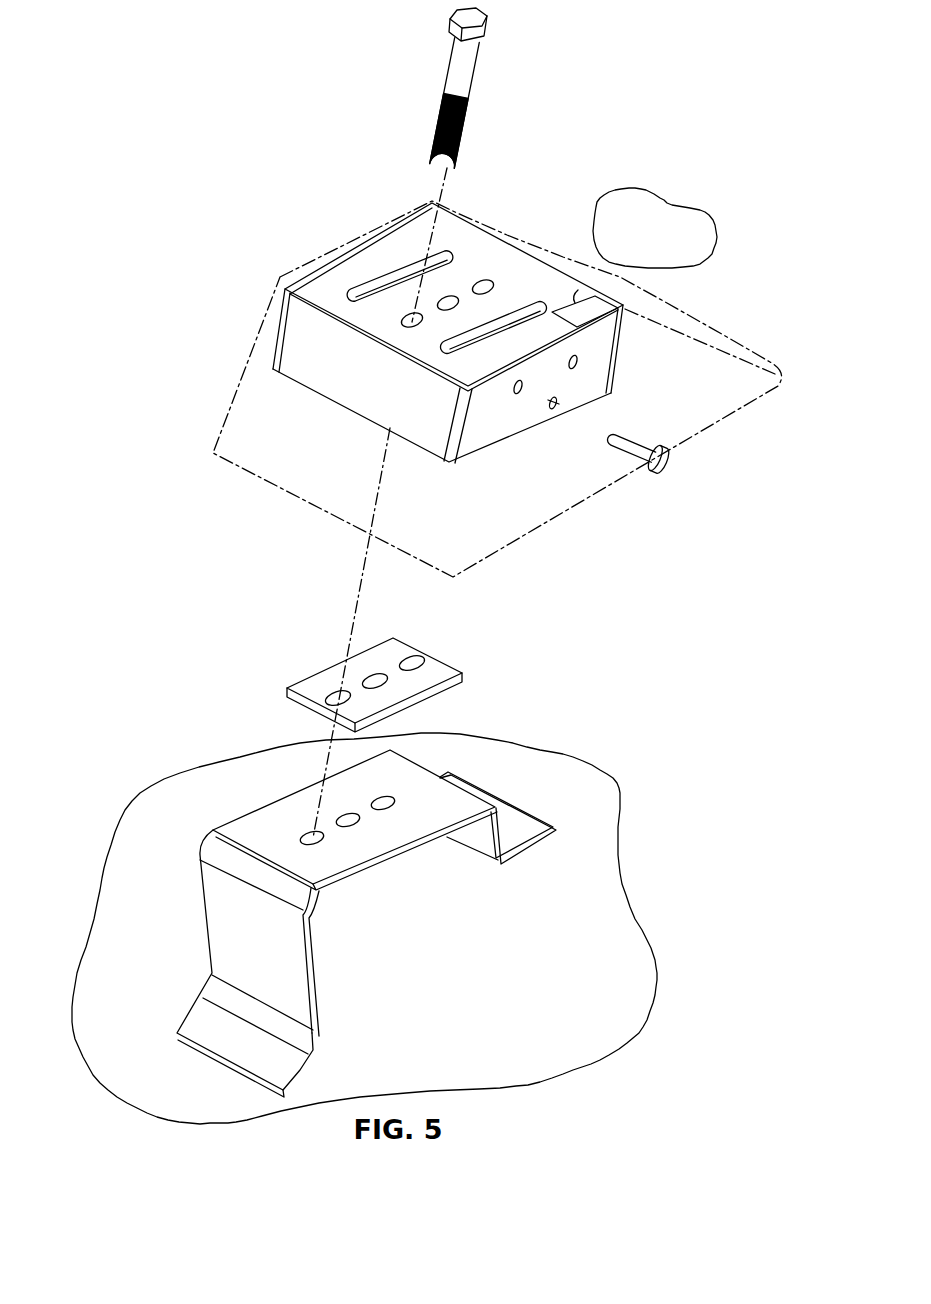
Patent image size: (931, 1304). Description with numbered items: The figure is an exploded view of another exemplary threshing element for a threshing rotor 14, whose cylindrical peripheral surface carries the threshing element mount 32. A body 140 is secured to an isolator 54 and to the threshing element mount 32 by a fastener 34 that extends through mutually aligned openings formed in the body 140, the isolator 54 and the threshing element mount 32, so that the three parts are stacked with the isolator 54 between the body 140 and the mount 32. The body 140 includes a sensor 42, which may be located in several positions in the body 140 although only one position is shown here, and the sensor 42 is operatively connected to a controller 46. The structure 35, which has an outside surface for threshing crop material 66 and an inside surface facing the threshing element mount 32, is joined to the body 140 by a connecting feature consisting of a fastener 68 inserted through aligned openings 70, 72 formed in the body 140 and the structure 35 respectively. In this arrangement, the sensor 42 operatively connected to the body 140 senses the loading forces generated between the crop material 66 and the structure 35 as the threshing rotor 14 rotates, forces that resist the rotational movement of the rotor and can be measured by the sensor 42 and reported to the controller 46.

The threshing rotor 14 is at (618, 847).
The threshing element mount 32 is at (318, 970).
The fastener 34 is at (488, 27).
The structure 35 is at (335, 249).
The sensor 42 is at (635, 317).
The controller 46 is at (608, 280).
The isolator 54 is at (327, 670).
The crop material 66 is at (648, 182).
The fastener 68 is at (672, 472).
The opening 70 is at (513, 393).
The opening 72 is at (560, 402).
The body 140 is at (508, 243).